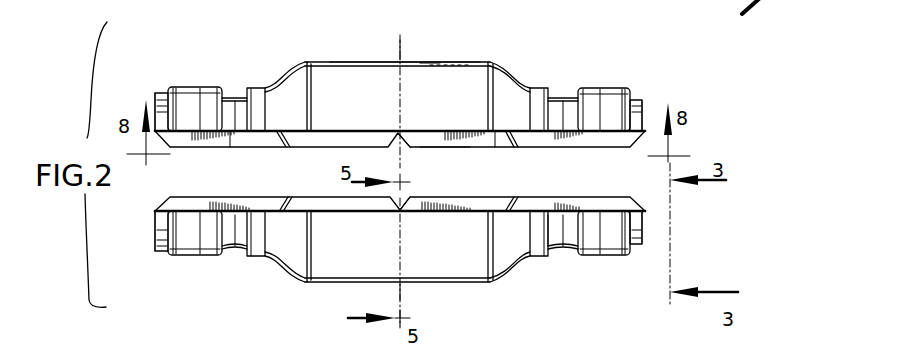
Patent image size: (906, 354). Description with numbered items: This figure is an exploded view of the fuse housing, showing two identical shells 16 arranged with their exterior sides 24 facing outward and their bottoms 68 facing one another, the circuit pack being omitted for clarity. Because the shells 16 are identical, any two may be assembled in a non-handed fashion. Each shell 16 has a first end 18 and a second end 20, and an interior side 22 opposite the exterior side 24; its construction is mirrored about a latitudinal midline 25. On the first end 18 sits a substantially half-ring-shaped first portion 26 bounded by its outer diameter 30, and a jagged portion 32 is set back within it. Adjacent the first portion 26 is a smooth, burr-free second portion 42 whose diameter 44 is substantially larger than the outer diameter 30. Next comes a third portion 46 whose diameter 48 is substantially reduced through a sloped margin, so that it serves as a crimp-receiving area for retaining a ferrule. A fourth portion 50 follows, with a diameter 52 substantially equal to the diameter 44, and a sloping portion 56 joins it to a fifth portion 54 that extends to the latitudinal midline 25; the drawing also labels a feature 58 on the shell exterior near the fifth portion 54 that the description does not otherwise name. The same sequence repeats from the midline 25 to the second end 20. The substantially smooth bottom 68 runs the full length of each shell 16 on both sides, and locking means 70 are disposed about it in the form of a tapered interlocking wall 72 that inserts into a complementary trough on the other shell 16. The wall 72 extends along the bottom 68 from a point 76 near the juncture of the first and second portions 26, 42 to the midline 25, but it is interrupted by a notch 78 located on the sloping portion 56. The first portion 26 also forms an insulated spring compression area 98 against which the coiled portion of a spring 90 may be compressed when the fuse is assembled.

The shell 16 is at (444, 52).
The first end 18 is at (145, 88).
The second end 20 is at (646, 89).
The interior side 22 is at (537, 262).
The exterior side 24 is at (418, 113).
The latitudinal midline 25 is at (399, 36).
The first portion 26 is at (163, 110).
The outer diameter 30 is at (165, 93).
The jagged portion 32 is at (157, 100).
The second portion 42 is at (185, 88).
The diameter 44 is at (200, 88).
The third portion 46 is at (230, 97).
The diameter 48 is at (240, 97).
The fourth portion 50 is at (256, 90).
The diameter 52 is at (262, 88).
The fifth portion 54 is at (332, 80).
The sloping portion 56 is at (290, 78).
The top wall 58 is at (423, 62).
The bottom 68 is at (594, 148).
The locking means 70 is at (429, 153).
The interlocking wall 72 is at (495, 148).
The point 76 is at (398, 140).
The notch 78 is at (515, 131).
The spring 90 is at (634, 5).
The insulated spring compression area 98 is at (642, 115).